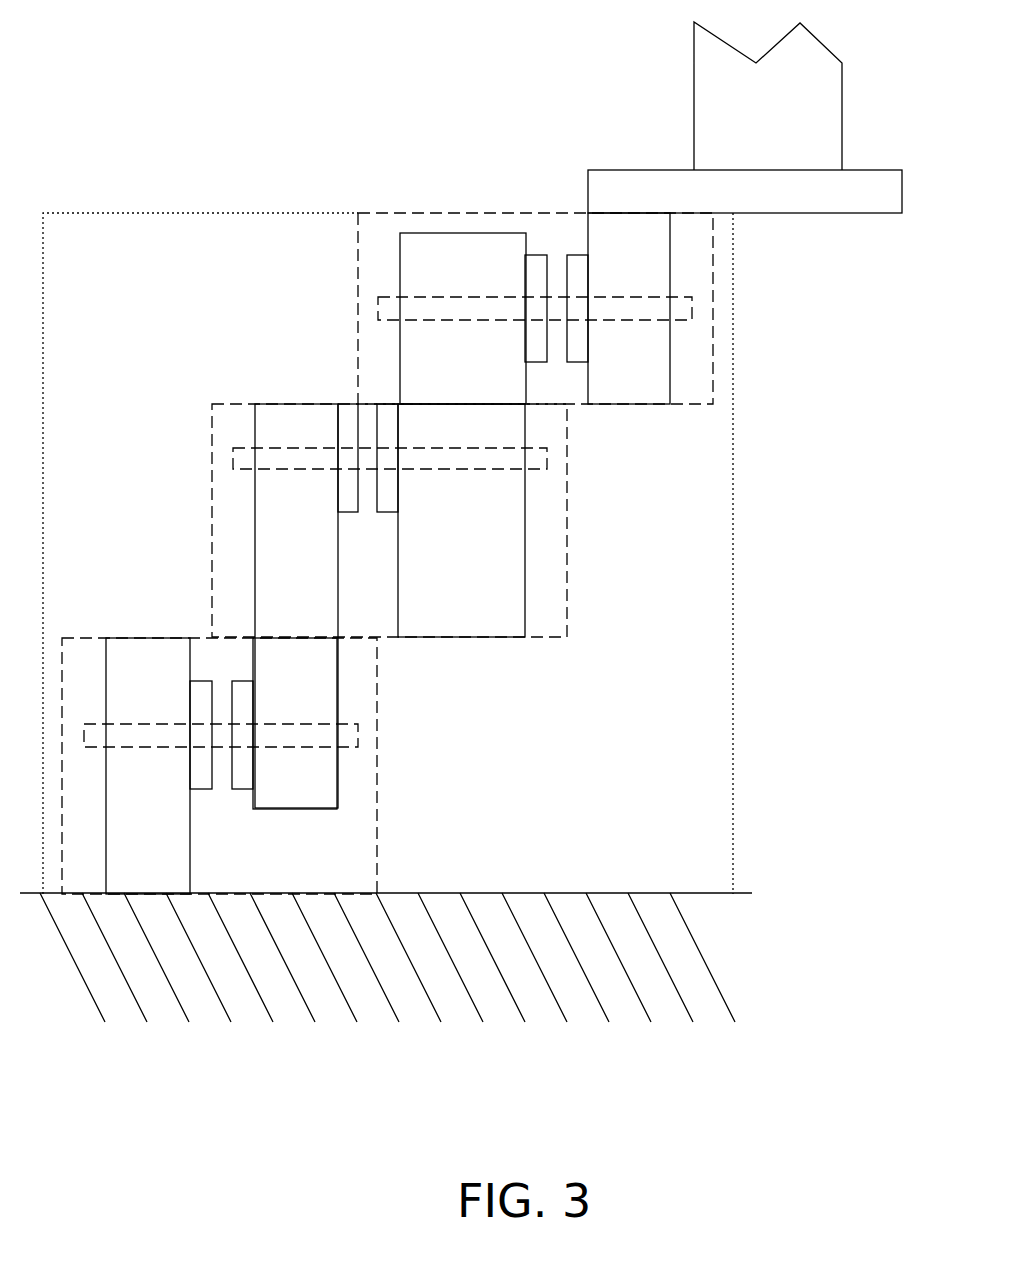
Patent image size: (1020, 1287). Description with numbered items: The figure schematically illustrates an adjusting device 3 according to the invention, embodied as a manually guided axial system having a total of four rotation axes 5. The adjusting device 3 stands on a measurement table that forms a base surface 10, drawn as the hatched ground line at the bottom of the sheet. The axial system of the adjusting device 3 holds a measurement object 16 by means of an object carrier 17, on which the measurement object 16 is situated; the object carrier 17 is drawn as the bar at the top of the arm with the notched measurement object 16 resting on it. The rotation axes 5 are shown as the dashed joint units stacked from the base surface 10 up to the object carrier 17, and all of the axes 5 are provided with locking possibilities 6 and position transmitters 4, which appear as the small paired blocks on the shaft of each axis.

The adjusting device 3 is at (733, 405).
The position transmitter 4 is at (189, 681).
The rotation axis 5 is at (648, 405).
The locking possibility 6 is at (567, 255).
The base surface 10 is at (632, 893).
The measurement object 16 is at (798, 128).
The object carrier 17 is at (755, 192).